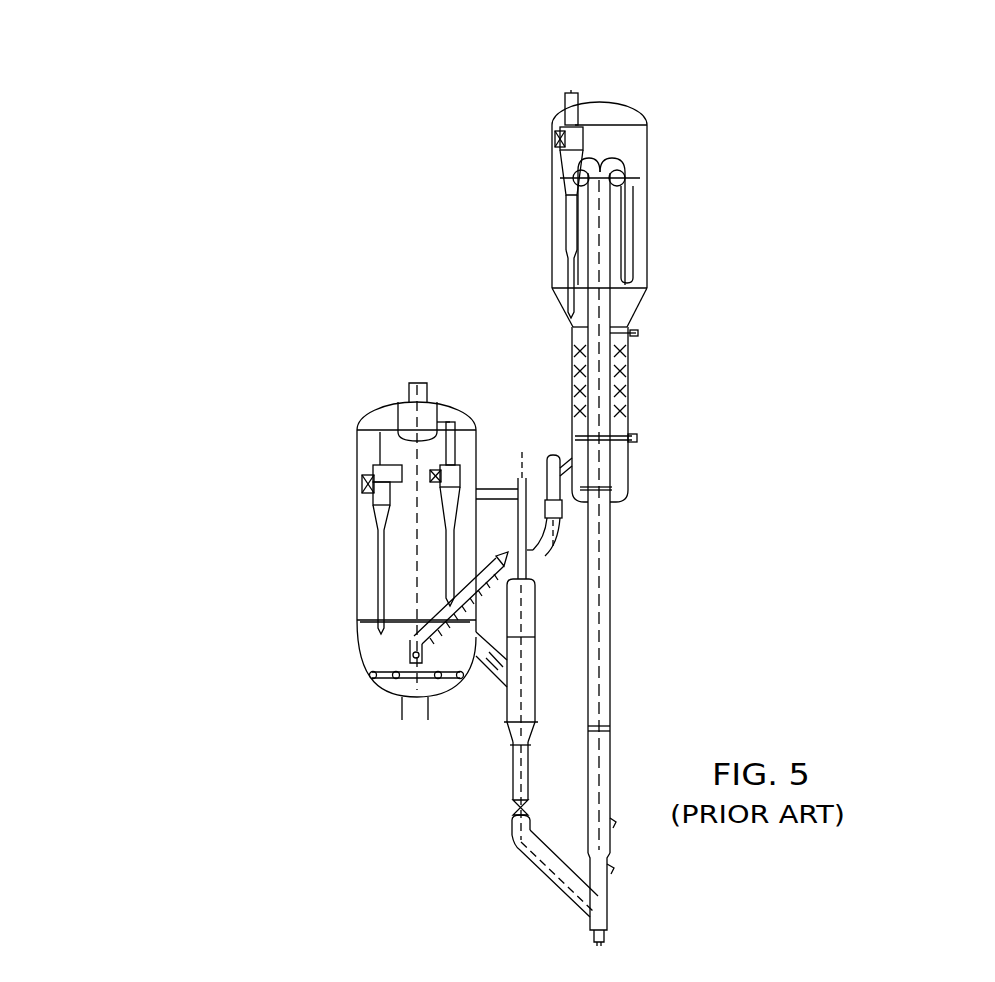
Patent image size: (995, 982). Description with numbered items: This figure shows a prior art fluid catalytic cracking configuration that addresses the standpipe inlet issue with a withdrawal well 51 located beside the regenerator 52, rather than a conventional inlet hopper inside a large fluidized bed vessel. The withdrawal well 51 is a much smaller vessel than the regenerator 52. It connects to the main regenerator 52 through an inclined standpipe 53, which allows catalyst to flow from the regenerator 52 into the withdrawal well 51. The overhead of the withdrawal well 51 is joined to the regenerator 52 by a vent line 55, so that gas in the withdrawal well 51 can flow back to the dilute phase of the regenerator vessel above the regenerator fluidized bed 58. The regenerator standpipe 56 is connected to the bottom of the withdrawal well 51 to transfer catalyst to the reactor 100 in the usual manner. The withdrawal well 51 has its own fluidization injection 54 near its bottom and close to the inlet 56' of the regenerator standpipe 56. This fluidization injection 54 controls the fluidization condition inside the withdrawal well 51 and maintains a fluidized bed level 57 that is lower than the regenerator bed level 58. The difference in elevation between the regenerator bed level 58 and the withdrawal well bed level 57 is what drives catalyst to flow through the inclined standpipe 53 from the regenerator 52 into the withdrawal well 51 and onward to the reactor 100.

The reactor 100 is at (652, 199).
The regenerator 52 is at (354, 449).
The withdrawal well 51 is at (538, 604).
The inclined standpipe 53 is at (496, 670).
The fluidization injection 54 is at (512, 730).
The vent line 55 is at (493, 489).
The regenerator standpipe 56 is at (331, 829).
The inlet of regenerator standpipe 56' is at (478, 762).
The fluidized bed level 57 is at (537, 640).
The regenerator fluidized bed 58 is at (357, 637).